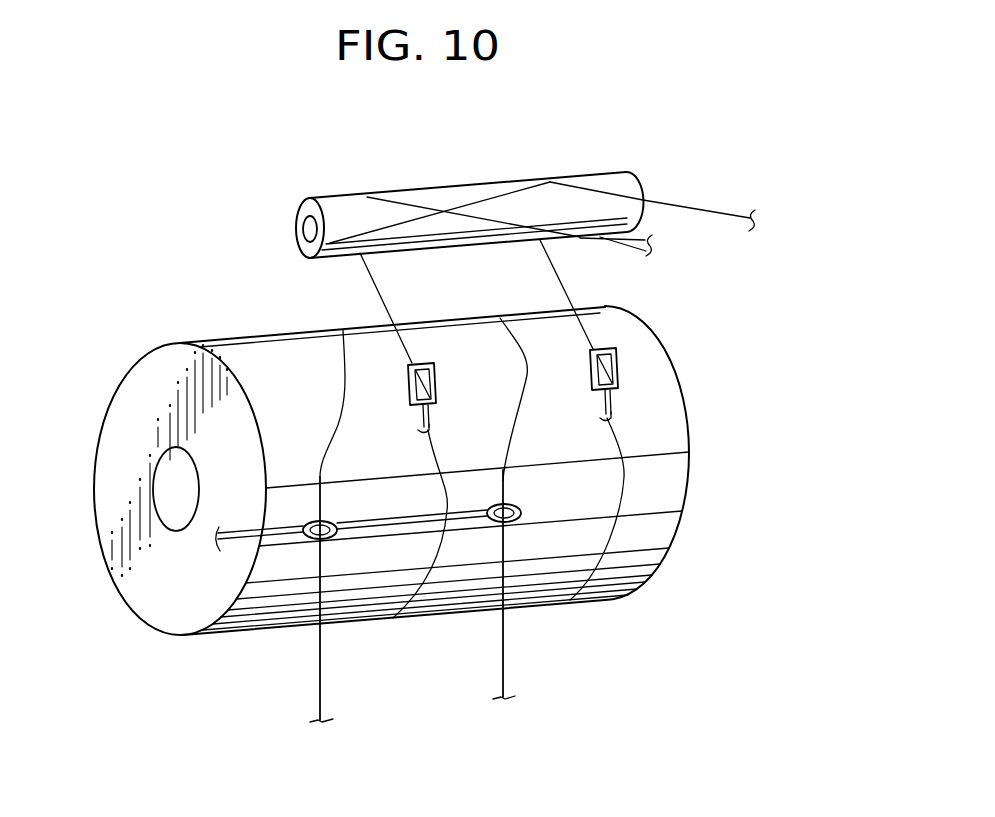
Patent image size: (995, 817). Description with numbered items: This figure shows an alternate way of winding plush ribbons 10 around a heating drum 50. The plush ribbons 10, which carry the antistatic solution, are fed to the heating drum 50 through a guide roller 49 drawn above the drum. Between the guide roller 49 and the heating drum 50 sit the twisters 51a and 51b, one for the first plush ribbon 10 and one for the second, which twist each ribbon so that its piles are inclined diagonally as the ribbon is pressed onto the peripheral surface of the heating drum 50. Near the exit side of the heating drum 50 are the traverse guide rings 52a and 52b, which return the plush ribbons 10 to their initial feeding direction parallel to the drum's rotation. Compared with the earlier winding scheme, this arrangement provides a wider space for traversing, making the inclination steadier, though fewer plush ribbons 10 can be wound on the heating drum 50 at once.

The plush ribbon 10 is at (713, 208).
The guide roller 49 is at (455, 186).
The heating drum 50 is at (668, 475).
The twister 51a is at (618, 365).
The twister 51b is at (437, 380).
The traverse guide ring 52a is at (512, 523).
The traverse guide ring 52b is at (332, 538).